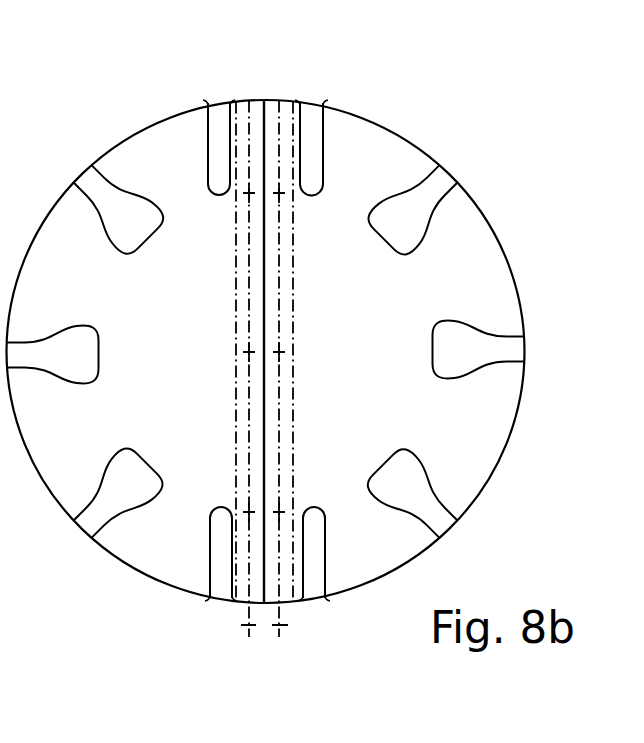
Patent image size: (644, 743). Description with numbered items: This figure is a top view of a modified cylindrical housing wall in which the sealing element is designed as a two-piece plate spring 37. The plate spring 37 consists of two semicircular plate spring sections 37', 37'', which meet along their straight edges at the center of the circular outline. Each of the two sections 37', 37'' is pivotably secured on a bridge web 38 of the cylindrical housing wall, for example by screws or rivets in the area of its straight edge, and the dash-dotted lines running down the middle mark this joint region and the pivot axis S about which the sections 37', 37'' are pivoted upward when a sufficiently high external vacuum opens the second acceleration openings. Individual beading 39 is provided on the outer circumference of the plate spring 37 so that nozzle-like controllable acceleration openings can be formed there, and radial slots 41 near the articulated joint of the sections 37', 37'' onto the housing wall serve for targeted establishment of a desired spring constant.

The plate spring 37 is at (261, 324).
The plate spring section 37' is at (115, 163).
The plate spring section 37'' is at (266, 335).
The bridge web 38 is at (297, 405).
The beading 39 is at (440, 173).
The radial slot 41 is at (216, 116).
The pivot axis s is at (250, 625).